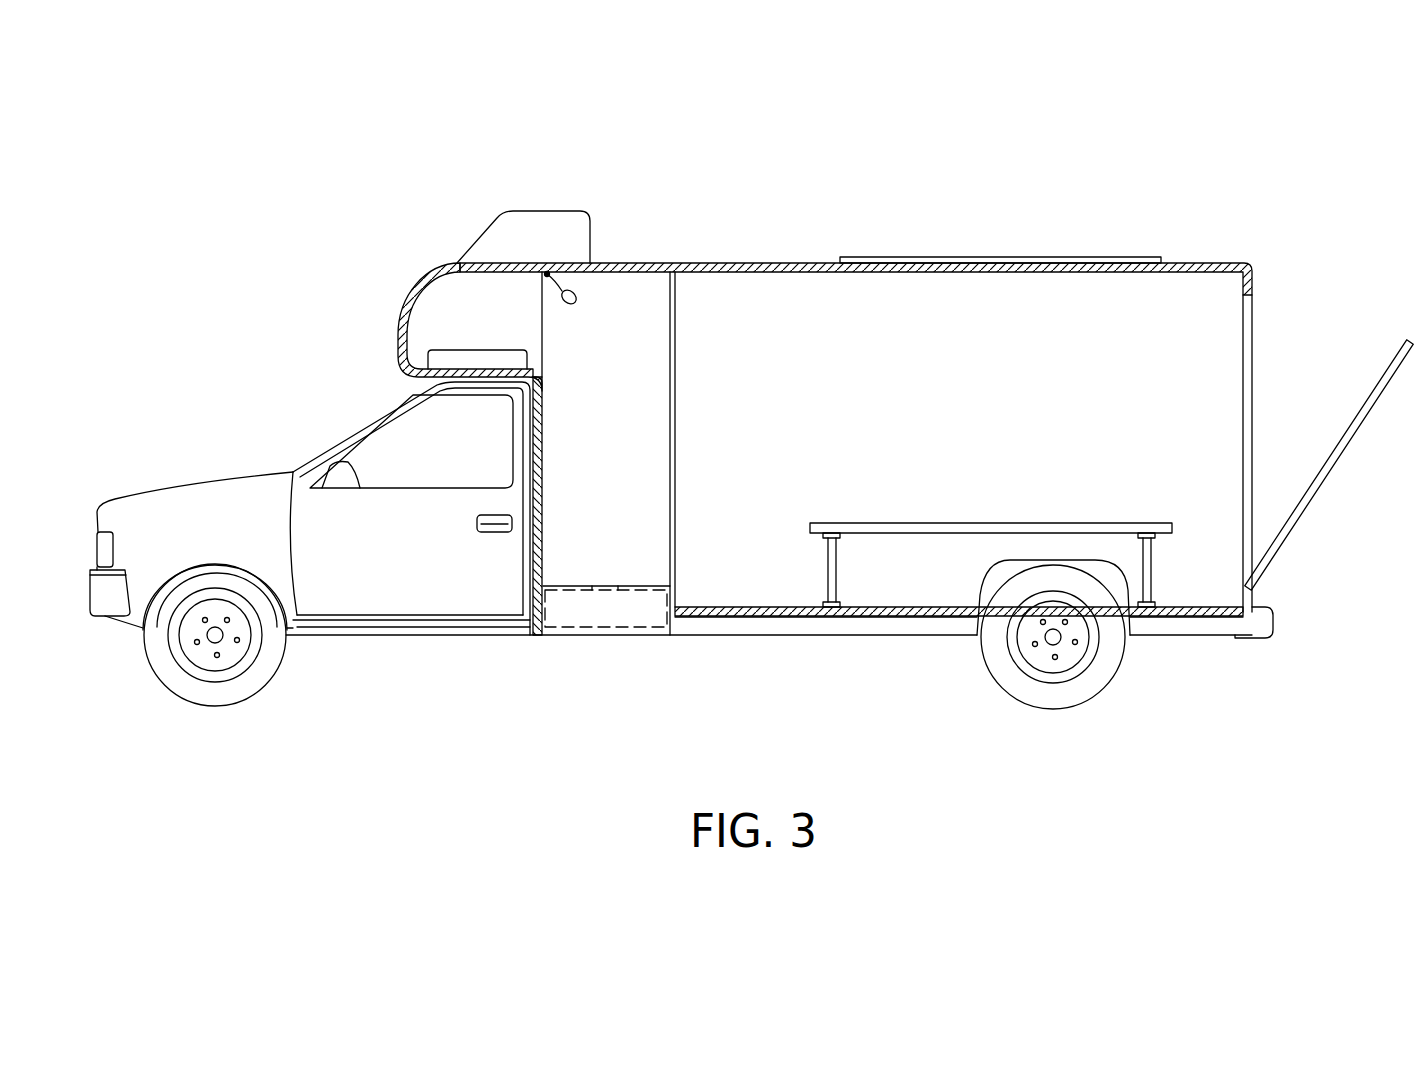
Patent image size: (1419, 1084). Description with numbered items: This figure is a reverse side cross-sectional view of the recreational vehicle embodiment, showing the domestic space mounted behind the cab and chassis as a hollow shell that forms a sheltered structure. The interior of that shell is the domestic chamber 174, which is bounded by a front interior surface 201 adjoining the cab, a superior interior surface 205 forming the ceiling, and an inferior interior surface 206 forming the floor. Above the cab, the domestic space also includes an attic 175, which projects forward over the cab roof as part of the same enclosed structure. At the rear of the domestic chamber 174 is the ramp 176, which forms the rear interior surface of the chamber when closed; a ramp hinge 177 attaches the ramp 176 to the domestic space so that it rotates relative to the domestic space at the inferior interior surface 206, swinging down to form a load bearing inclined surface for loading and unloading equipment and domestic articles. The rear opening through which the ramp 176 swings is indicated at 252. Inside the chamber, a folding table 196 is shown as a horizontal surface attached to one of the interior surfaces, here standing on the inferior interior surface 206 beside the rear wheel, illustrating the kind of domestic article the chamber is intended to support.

The domestic chamber 174 is at (815, 318).
The attic 175 is at (440, 303).
The ramp 176 is at (1340, 445).
The ramp hinge 177 is at (1252, 592).
The folding table 196 is at (910, 525).
The front interior surface 201 is at (558, 458).
The superior interior surface 205 is at (980, 272).
The inferior interior surface 206 is at (718, 607).
The rear door opening frame 252 is at (1337, 403).